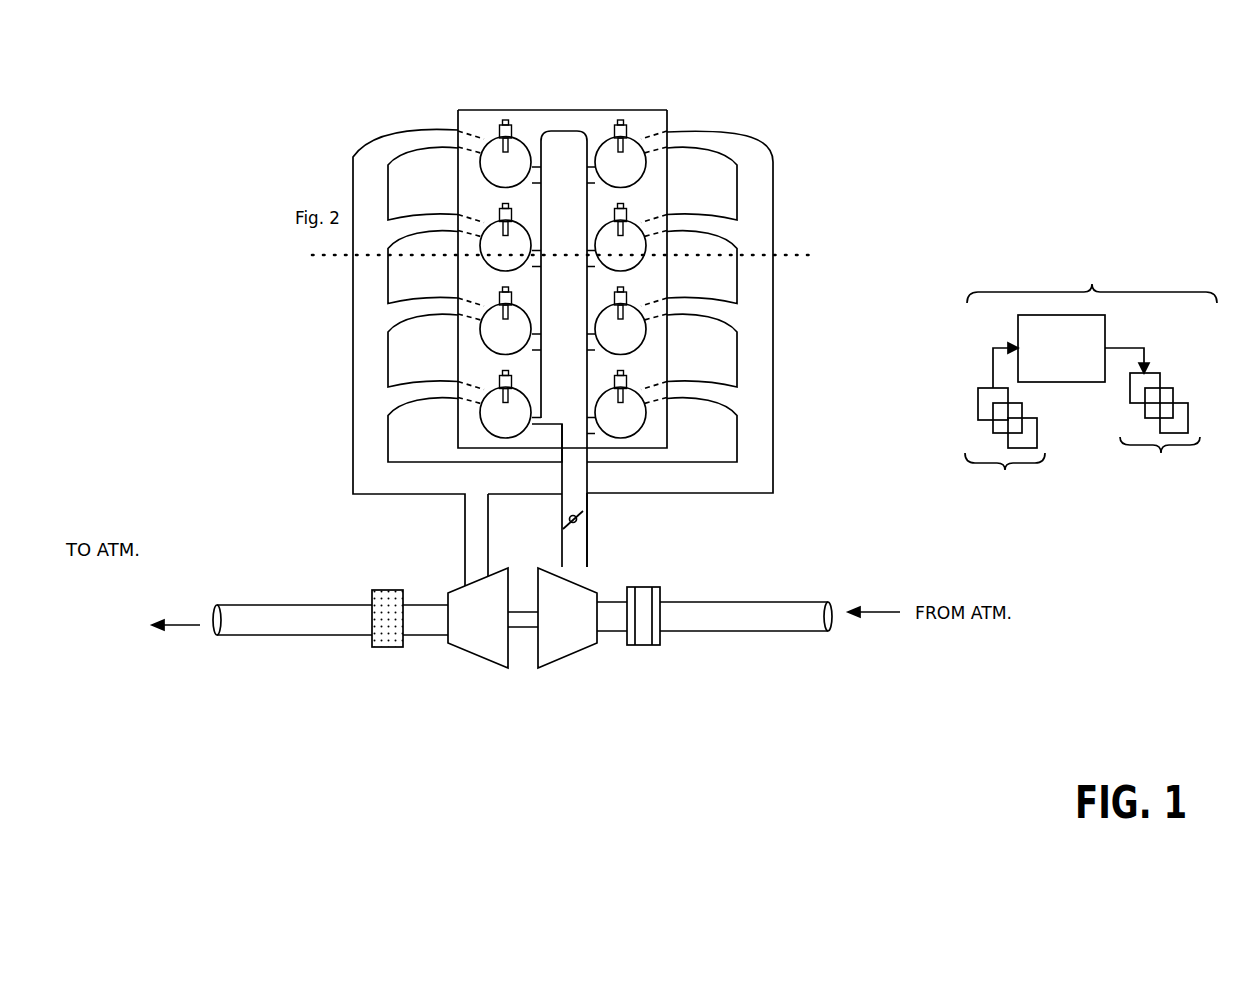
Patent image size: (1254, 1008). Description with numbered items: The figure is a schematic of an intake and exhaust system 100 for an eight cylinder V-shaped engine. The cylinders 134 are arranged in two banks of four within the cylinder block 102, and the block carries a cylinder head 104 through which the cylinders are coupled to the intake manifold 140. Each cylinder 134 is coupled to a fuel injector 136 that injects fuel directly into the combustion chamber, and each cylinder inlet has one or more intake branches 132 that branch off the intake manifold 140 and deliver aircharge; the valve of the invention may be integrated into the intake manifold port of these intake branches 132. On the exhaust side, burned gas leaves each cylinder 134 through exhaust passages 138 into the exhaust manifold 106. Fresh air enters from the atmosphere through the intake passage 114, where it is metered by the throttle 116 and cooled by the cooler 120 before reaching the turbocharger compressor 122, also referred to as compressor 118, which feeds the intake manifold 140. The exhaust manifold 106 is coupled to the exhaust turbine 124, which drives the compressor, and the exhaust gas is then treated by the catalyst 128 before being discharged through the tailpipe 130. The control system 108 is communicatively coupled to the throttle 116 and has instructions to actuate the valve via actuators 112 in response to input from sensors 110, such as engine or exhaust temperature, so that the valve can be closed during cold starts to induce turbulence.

The engine system 100 is at (868, 114).
The cylinder block 102 is at (564, 110).
The cylinder head 104 is at (659, 110).
The exhaust manifold 106 is at (776, 318).
The control system 108 is at (1092, 316).
The sensors 110 is at (1005, 447).
The actuators 112 is at (1160, 432).
The intake passage 114 is at (587, 502).
The throttle 116 is at (579, 526).
The compressor 118 is at (707, 602).
The cooler 120 is at (649, 645).
The compressor 122 is at (585, 631).
The exhaust turbine 124 is at (498, 631).
The catalyst 128 is at (372, 592).
The tailpipe 130 is at (278, 605).
The intake branches 132 is at (535, 240).
The cylinders 134 is at (497, 145).
The fuel injector 136 is at (499, 125).
The exhaust passages 138 is at (409, 132).
The intake manifold 140 is at (583, 242).